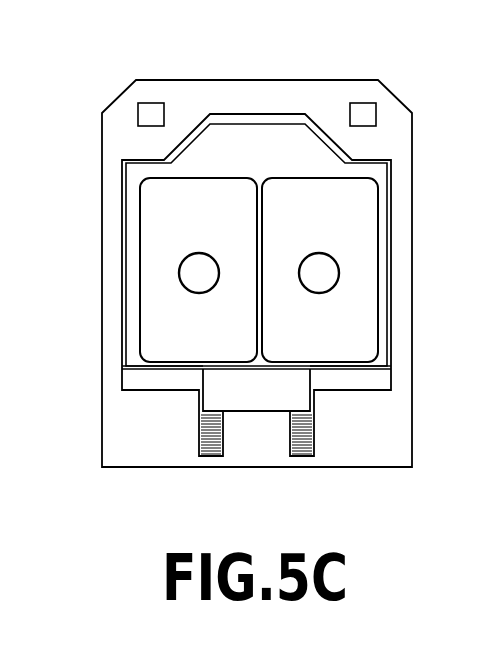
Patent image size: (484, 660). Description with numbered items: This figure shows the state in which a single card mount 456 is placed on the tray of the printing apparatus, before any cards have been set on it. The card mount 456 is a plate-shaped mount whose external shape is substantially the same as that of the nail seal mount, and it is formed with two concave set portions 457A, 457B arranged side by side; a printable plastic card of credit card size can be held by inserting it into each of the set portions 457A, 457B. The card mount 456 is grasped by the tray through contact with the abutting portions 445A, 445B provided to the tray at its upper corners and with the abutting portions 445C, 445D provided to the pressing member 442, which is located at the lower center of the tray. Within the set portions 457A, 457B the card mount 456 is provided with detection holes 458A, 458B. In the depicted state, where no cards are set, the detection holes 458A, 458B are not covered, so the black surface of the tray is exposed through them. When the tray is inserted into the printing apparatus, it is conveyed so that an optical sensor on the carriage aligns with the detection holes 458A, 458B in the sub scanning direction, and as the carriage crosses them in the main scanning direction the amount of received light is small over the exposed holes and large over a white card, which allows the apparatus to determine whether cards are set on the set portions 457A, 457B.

The pressing member 442 is at (257, 400).
The abutting portion 445A is at (158, 163).
The abutting portion 445B is at (365, 163).
The abutting portion 445C is at (217, 367).
The abutting portion 445D is at (297, 367).
The card mount 456 is at (255, 142).
The set portion 457A is at (155, 220).
The set portion 457B is at (360, 220).
The detection hole 458A is at (182, 277).
The detection hole 458B is at (336, 277).